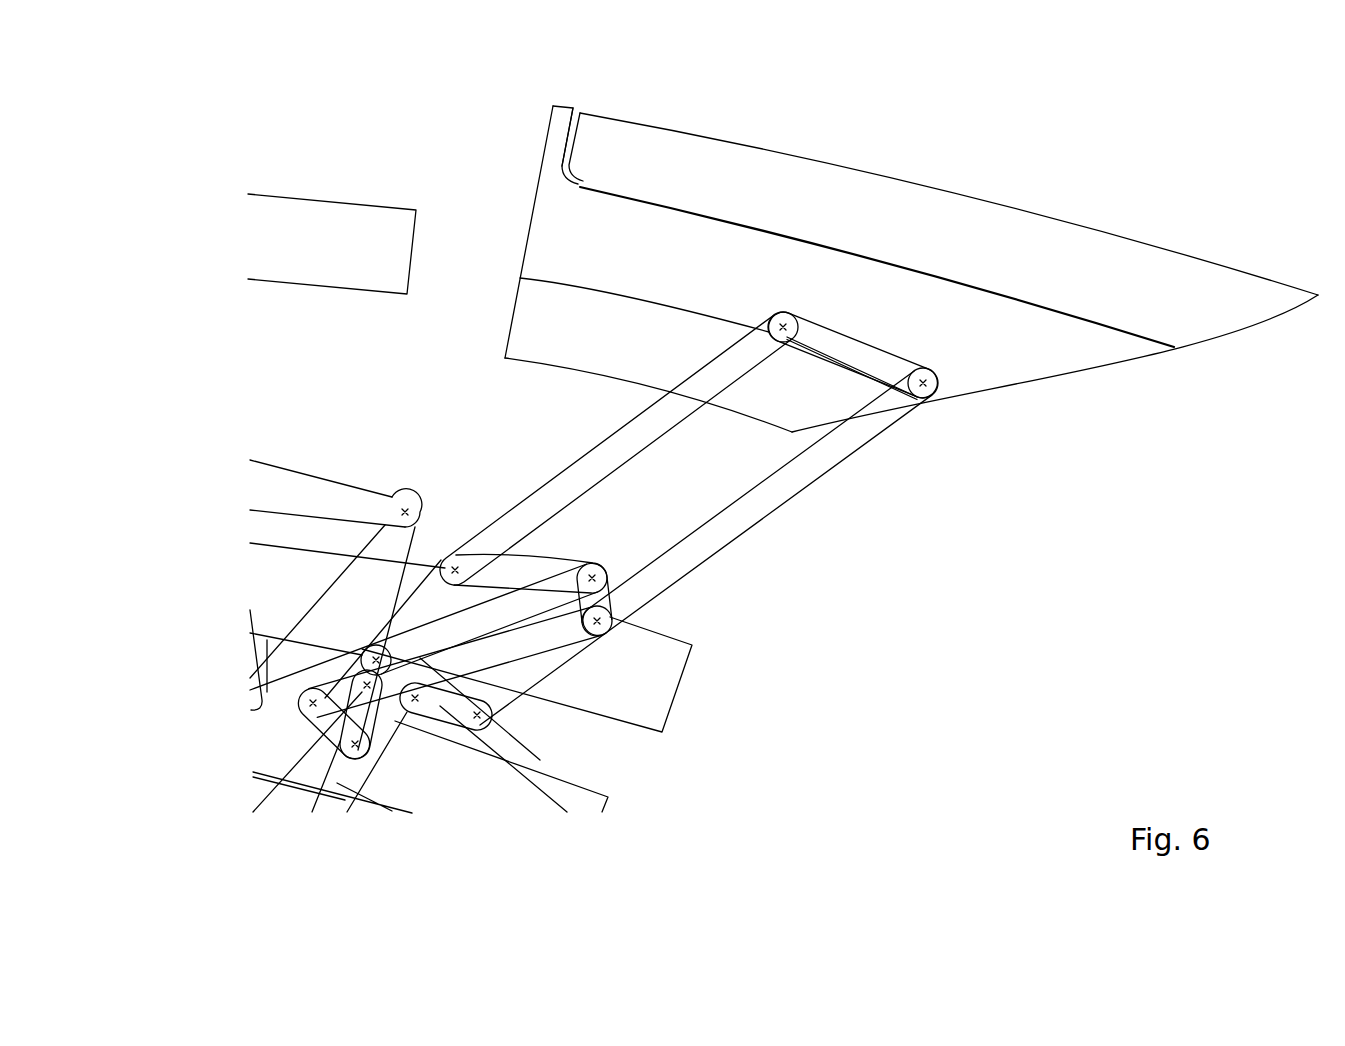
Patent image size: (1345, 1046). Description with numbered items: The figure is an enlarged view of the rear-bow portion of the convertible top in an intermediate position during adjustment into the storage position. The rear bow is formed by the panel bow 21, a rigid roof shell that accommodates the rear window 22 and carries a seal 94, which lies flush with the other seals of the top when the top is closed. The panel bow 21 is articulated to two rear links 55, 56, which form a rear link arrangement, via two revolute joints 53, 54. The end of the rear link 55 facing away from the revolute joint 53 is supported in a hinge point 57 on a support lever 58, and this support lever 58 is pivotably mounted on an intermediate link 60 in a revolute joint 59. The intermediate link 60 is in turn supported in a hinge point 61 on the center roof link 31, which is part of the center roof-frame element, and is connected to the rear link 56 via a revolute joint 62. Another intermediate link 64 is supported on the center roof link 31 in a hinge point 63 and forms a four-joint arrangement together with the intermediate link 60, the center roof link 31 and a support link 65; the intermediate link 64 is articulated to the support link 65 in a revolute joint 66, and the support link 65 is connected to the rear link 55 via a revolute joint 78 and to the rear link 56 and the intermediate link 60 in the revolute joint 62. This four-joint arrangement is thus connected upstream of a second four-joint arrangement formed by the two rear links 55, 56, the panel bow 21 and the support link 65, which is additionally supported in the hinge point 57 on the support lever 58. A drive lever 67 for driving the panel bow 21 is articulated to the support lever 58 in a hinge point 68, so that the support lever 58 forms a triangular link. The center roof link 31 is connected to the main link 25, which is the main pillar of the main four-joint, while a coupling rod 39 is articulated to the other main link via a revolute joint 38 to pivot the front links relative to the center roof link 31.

The panel bow 21 is at (565, 118).
The rear window 22 is at (1015, 242).
The main link 25 is at (378, 538).
The center roof link 31 is at (315, 723).
The revolute joint 38 is at (403, 511).
The coupling rod 39 is at (295, 487).
The revolute joint 53 is at (784, 326).
The revolute joint 54 is at (923, 383).
The rear link 55 is at (615, 448).
The rear link 56 is at (807, 478).
The hinge point 57 is at (373, 657).
The support lever 58 is at (460, 700).
The revolute joint 59 is at (477, 715).
The intermediate link 60 is at (558, 650).
The hinge point 61 is at (353, 745).
The revolute joint 62 is at (611, 620).
The hinge point 63 is at (312, 703).
The intermediate link 64 is at (462, 640).
The support link 65 is at (520, 580).
The revolute joint 66 is at (594, 577).
The drive lever 67 is at (353, 772).
The hinge point 68 is at (413, 698).
The revolute joint 78 is at (455, 570).
The seal 94 is at (590, 330).